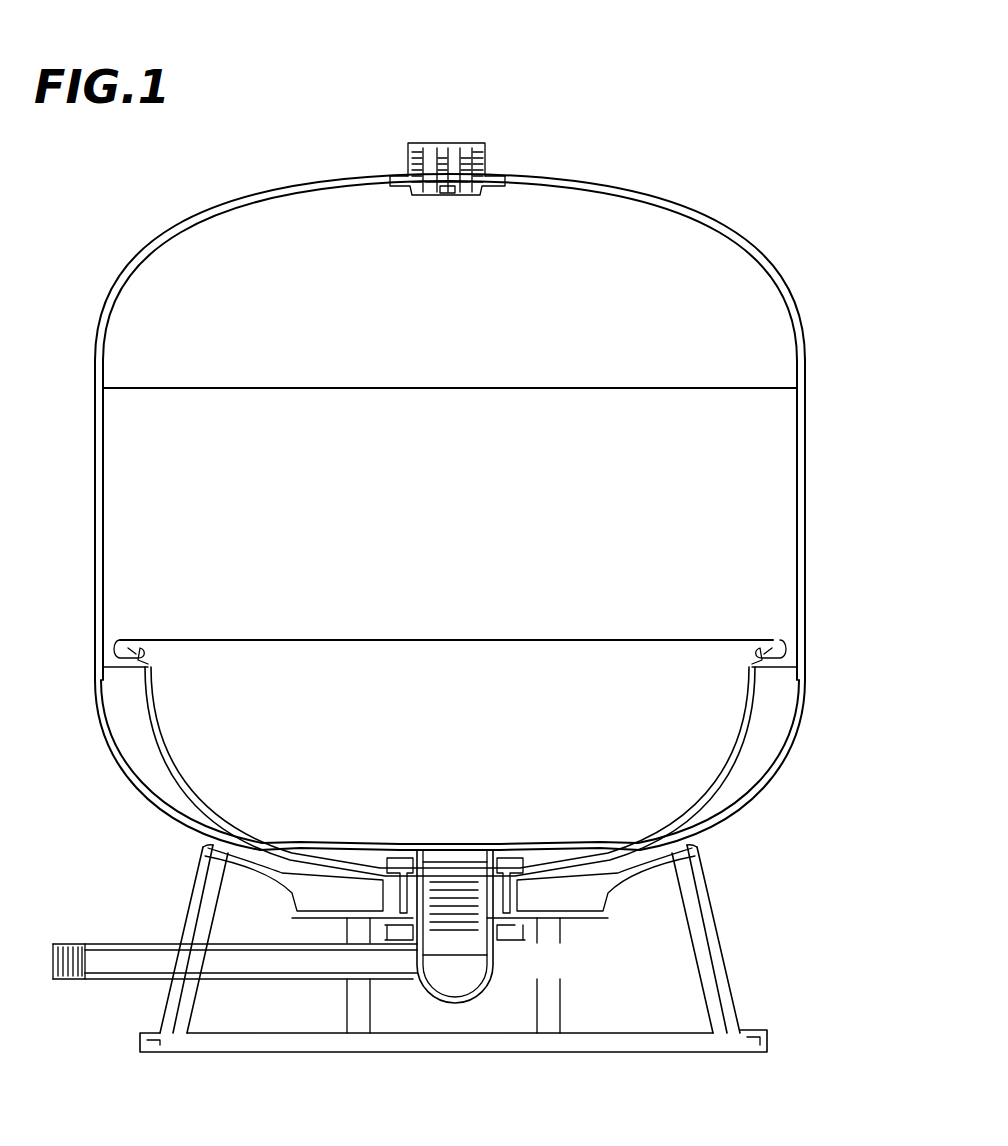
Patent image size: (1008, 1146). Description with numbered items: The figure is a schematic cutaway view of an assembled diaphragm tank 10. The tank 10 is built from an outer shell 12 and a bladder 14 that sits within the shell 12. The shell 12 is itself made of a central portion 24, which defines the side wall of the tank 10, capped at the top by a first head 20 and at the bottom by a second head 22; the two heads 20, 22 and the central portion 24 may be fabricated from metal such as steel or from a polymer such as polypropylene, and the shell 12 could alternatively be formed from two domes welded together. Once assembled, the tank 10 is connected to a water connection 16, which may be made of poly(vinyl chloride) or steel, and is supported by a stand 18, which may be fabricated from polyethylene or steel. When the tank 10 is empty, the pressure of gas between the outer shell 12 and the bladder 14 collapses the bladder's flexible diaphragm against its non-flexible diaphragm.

The tank 10 is at (506, 535).
The shell 12 is at (506, 509).
The bladder 14 is at (748, 705).
The water connection 16 is at (103, 983).
The stand 18 is at (738, 962).
The first head 20 is at (758, 240).
The second head 22 is at (790, 765).
The central portion 24 is at (806, 430).